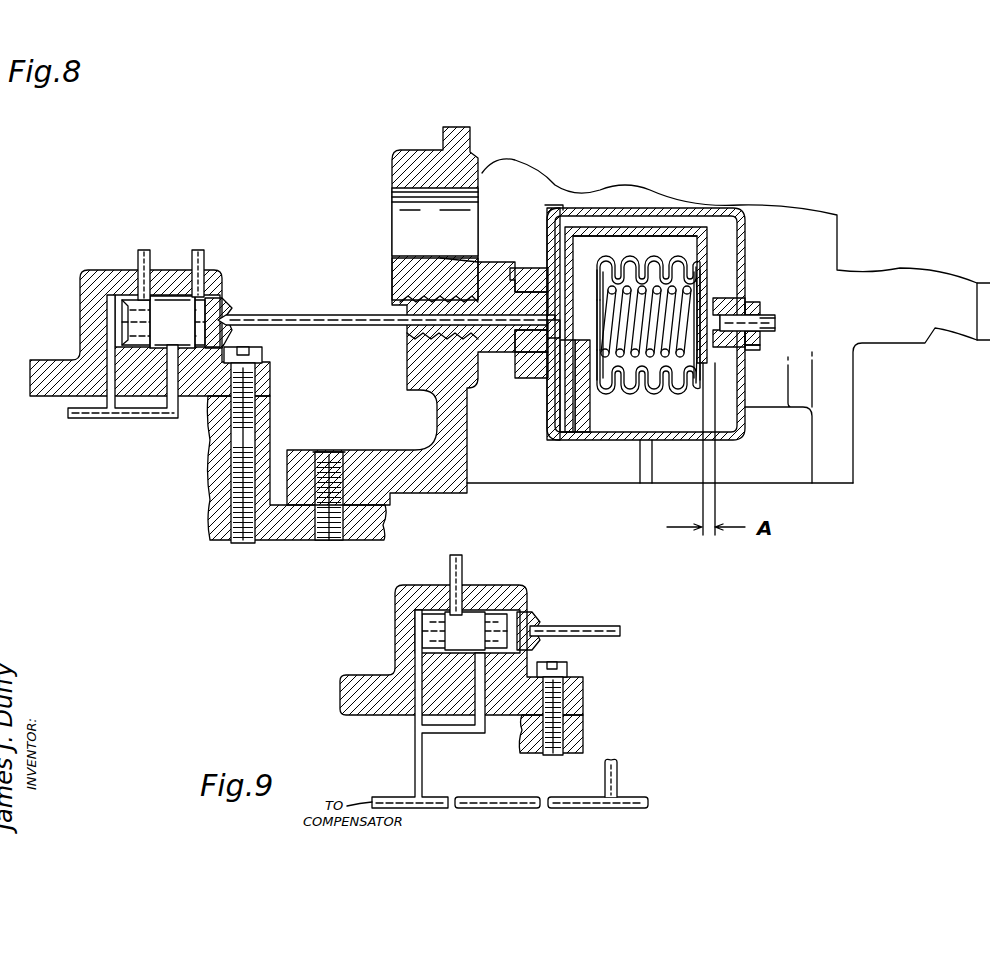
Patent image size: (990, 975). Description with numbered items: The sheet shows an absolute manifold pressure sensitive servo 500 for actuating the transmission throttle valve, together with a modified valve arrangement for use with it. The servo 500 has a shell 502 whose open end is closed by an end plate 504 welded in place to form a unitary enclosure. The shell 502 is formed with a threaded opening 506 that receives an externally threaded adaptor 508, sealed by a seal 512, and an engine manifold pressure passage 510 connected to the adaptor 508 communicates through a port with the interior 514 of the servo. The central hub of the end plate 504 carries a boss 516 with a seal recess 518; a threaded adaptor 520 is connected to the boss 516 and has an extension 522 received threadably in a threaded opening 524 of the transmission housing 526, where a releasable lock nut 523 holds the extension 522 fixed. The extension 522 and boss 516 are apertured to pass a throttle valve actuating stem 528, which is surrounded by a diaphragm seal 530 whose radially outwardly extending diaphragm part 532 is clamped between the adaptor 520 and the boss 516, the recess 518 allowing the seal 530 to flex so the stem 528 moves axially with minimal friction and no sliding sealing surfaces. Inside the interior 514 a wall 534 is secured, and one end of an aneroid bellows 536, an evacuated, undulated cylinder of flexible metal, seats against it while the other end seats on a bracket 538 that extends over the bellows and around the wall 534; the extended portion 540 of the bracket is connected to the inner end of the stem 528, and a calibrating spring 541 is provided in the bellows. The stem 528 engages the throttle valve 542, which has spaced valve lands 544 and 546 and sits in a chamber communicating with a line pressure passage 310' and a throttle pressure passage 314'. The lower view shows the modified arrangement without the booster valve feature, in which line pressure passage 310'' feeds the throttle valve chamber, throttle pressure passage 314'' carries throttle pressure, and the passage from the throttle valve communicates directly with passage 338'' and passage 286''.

In FIG. 8, the line pressure passage 310' is at (118, 254).
In FIG. 8, the throttle pressure passage 314' is at (96, 375).
In FIG. 8, the absolute manifold pressure sensitive servo 500 is at (737, 427).
In FIG. 8, the shell 502 is at (644, 484).
In FIG. 8, the end plate 504 is at (548, 228).
In FIG. 8, the threaded opening 506 is at (744, 300).
In FIG. 8, the externally threaded adaptor 508 is at (762, 340).
In FIG. 8, the engine manifold pressure passage 510 is at (776, 322).
In FIG. 8, the seal 512 is at (750, 306).
In FIG. 8, the interior of the servo 514 is at (735, 242).
In FIG. 8, the boss 516 is at (540, 270).
In FIG. 8, the seal recess 518 is at (560, 362).
In FIG. 8, the threaded adaptor 520 is at (540, 385).
In FIG. 8, the extension 522 is at (405, 302).
In FIG. 8, the releasable lock nut 523 is at (485, 262).
In FIG. 8, the threaded opening 524 is at (420, 332).
In FIG. 8, the transmission housing 526 is at (448, 402).
In FIG. 8, the throttle valve actuating stem 528 is at (552, 333).
In FIG. 8, the diaphragm seal 530 is at (528, 372).
In FIG. 8, the diaphragm part 532 is at (525, 283).
In FIG. 8, the wall 534 is at (595, 268).
In FIG. 8, the aneroid bellows 536 is at (648, 270).
In FIG. 8, the bracket 538 is at (705, 240).
In FIG. 8, the extended portion 540 is at (622, 212).
In FIG. 8, the calibrating spring 541 is at (638, 398).
In FIG. 8, the throttle valve 542 is at (160, 313).
In FIG. 8, the valve land 544 is at (128, 305).
In FIG. 8, the valve land 546 is at (222, 300).
In FIG. 9, the line pressure passage 310'' is at (494, 577).
In FIG. 9, the throttle pressure passage 314'' is at (428, 709).
In FIG. 9, the passage 338'' is at (648, 771).
In FIG. 9, the passage 286'' is at (582, 812).